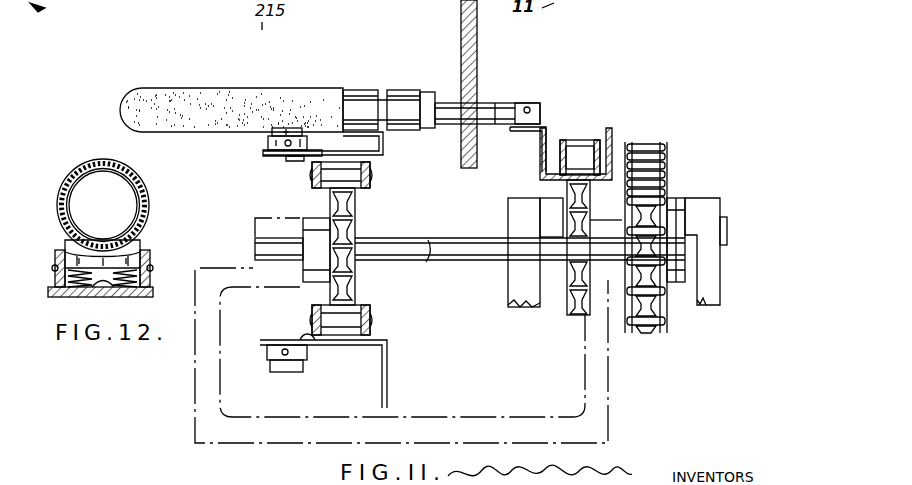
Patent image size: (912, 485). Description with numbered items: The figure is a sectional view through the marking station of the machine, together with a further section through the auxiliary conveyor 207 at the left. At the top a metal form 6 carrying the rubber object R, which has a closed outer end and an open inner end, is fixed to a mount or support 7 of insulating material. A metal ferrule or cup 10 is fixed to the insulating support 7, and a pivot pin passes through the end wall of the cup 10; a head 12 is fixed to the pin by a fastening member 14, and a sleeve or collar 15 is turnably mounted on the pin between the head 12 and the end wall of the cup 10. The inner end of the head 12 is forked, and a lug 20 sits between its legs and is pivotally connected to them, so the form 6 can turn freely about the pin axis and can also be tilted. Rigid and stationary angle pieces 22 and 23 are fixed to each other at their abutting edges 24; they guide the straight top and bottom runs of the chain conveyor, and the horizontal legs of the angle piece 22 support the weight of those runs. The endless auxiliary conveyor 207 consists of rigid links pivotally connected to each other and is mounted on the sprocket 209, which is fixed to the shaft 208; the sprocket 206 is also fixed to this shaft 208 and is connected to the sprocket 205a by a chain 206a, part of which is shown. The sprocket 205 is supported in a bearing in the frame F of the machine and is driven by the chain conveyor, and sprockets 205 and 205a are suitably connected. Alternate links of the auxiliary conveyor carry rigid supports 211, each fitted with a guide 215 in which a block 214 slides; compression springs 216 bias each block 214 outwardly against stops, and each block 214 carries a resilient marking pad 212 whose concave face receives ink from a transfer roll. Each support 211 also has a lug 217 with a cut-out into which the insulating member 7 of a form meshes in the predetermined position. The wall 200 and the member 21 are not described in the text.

In FIG. 12, the rubber object R is at (80, 174).
In FIG. 11, the rubber object R is at (163, 96).
In FIG. 12, the metal form 6 is at (118, 180).
In FIG. 11, the metal form 6 is at (364, 90).
In FIG. 11, the mount or support 7 is at (405, 90).
In FIG. 11, the metal ferrule or cup 10 is at (429, 92).
In FIG. 11, the head 12 is at (506, 103).
In FIG. 11, the fastening member 14 is at (528, 104).
In FIG. 11, the sleeve or collar 15 is at (481, 103).
In FIG. 11, the lug 20 is at (531, 131).
In FIG. 11, the bracket 21 is at (546, 128).
In FIG. 11, the angle piece 22 is at (540, 157).
In FIG. 11, the angle piece 23 is at (601, 136).
In FIG. 11, the abutting edges 24 is at (626, 146).
In FIG. 11, the wall 200 is at (477, 53).
In FIG. 11, the sprocket 205 is at (576, 312).
In FIG. 11, the sprocket 205a is at (662, 191).
In FIG. 11, the sprocket 206 is at (645, 314).
In FIG. 11, the chain 206a is at (668, 163).
In FIG. 11, the auxiliary conveyor 207 is at (370, 172).
In FIG. 11, the shaft 208 is at (442, 238).
In FIG. 11, the sprocket 209 is at (356, 205).
In FIG. 12, the rigid support 211 is at (56, 296).
In FIG. 11, the rigid support 211 is at (265, 156).
In FIG. 12, the marking pad 212 is at (138, 244).
In FIG. 11, the marking pad 212 is at (268, 140).
In FIG. 12, the block 214 is at (142, 256).
In FIG. 12, the guide 215 is at (150, 283).
In FIG. 11, the guide 215 is at (270, 151).
In FIG. 12, the compression springs 216 is at (103, 292).
In FIG. 11, the lug 217 is at (383, 148).
In FIG. 11, the frame F is at (195, 408).